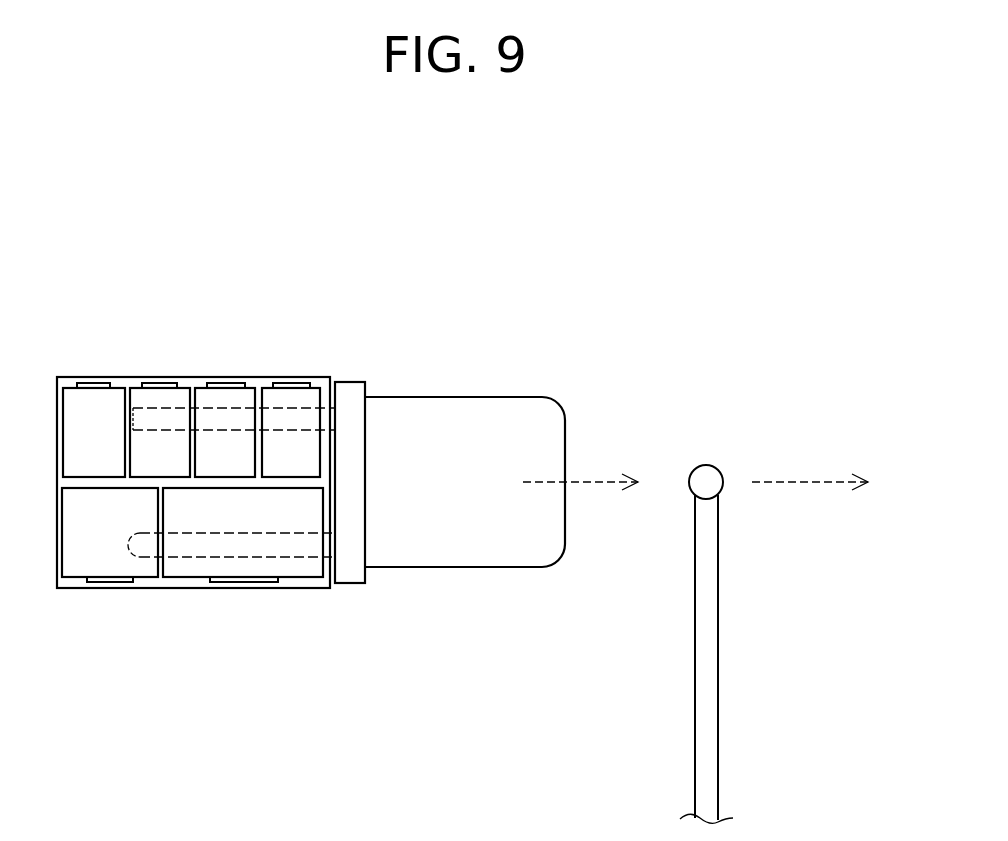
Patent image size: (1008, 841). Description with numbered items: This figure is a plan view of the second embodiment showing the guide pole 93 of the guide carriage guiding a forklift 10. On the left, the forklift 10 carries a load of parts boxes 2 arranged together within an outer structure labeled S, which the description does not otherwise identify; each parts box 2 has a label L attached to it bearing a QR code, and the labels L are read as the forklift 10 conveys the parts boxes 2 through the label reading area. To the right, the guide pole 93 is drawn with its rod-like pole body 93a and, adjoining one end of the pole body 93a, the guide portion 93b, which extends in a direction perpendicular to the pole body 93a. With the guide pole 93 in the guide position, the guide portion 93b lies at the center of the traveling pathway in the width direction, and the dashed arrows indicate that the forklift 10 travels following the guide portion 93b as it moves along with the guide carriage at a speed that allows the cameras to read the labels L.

The substrate S is at (225, 378).
The parts box 2 is at (167, 397).
The label L is at (98, 382).
The forklift 10 is at (453, 397).
The guide pole 93 is at (702, 599).
The pole body 93a is at (707, 678).
The guide portion 93b is at (707, 480).